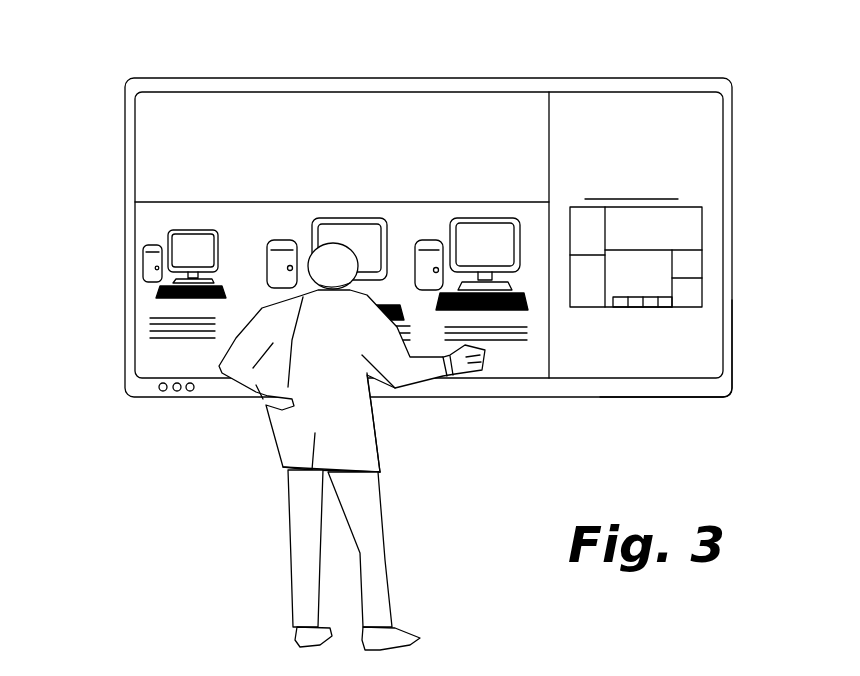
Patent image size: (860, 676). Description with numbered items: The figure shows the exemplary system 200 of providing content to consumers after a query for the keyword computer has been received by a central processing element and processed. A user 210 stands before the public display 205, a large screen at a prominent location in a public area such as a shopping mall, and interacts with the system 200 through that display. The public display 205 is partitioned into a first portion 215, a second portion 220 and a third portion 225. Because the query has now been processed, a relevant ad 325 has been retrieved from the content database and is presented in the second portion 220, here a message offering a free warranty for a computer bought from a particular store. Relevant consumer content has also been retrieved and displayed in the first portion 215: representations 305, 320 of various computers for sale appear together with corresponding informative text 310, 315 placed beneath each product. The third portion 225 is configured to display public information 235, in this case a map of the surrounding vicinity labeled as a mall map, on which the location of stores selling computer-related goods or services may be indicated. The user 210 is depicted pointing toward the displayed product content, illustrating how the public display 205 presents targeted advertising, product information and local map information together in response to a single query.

The system 200 is at (110, 85).
The public display 205 is at (713, 382).
The user 210 is at (208, 498).
The first portion 215 is at (175, 353).
The second portion 220 is at (301, 112).
The third portion 225 is at (685, 232).
The public information 235 is at (663, 318).
The representation 305 is at (533, 315).
The informative text 310 is at (515, 350).
The informative text 315 is at (145, 330).
The representation 320 is at (158, 228).
The relevant ad 325 is at (165, 155).